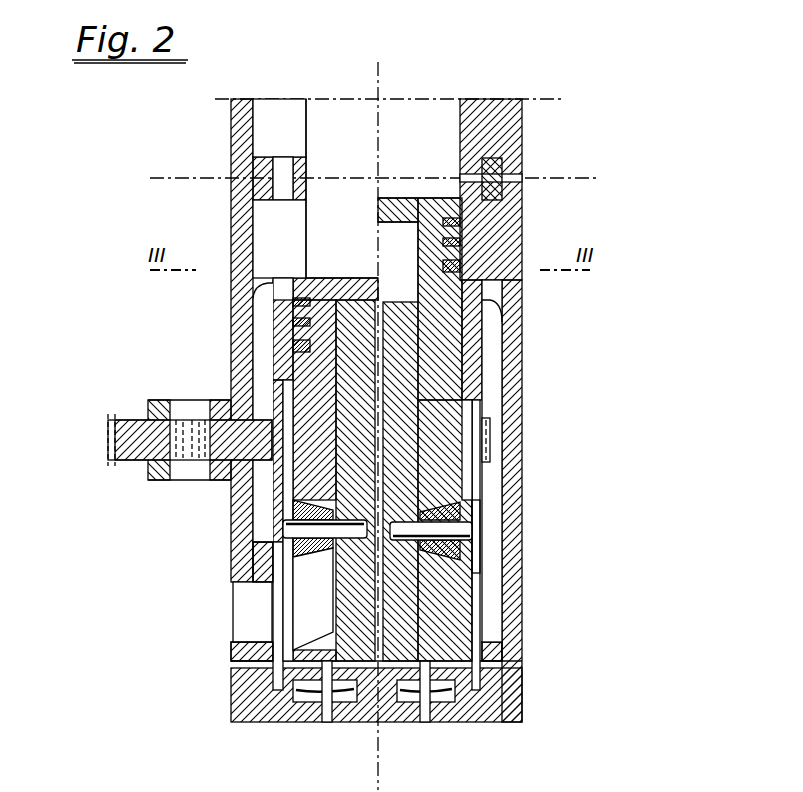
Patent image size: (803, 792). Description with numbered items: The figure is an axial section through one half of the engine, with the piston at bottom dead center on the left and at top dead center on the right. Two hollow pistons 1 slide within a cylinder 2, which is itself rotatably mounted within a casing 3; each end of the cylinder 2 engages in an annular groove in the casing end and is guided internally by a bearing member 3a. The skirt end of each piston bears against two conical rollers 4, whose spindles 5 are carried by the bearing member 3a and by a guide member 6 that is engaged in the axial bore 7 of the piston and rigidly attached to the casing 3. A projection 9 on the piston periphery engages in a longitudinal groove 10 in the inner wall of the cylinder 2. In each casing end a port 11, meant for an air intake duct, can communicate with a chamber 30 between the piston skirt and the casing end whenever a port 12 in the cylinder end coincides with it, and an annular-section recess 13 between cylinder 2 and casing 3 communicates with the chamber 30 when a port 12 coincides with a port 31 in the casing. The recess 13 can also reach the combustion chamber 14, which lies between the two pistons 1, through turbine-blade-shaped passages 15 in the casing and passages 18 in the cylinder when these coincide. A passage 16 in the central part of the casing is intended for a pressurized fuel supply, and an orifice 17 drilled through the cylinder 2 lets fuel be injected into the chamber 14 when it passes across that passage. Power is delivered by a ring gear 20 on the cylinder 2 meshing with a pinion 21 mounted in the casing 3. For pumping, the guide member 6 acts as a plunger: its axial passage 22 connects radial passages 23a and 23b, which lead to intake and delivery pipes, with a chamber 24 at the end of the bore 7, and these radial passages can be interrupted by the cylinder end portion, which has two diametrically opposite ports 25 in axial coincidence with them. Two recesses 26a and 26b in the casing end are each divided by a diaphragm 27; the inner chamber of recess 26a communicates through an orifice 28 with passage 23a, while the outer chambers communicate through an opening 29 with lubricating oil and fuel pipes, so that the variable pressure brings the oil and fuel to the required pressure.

The hollow piston 1 is at (300, 337).
The cylinder 2 is at (290, 541).
The casing 3 is at (245, 305).
The bearing member 3a is at (265, 562).
The conical rollers 4 is at (432, 520).
The spindles 5 is at (432, 536).
The guide member 6 is at (430, 422).
The axial bore 7 is at (455, 256).
The projection 9 is at (475, 388).
The longitudinal groove 10 is at (470, 462).
The port 11 is at (243, 604).
The ports 12 is at (280, 618).
The annular-section recess 13 is at (265, 500).
The combustion chamber 14 is at (383, 200).
The passages 15 is at (260, 292).
The passage 16 is at (500, 181).
The orifice 17 is at (462, 172).
The passages 18 is at (268, 238).
The ring gear 20 is at (482, 450).
The pinion 21 is at (130, 432).
The axial passage 22 is at (390, 342).
The radial passage 23a is at (256, 668).
The radial passage 23b is at (488, 672).
The chamber 24 is at (455, 240).
The ports 25 is at (510, 688).
The recess 26a is at (348, 697).
The recess 26b is at (412, 697).
The diaphragm 27 is at (447, 722).
The orifice 28 is at (328, 662).
The opening 29 is at (326, 722).
The chamber 30 is at (308, 585).
The port 31 is at (478, 577).